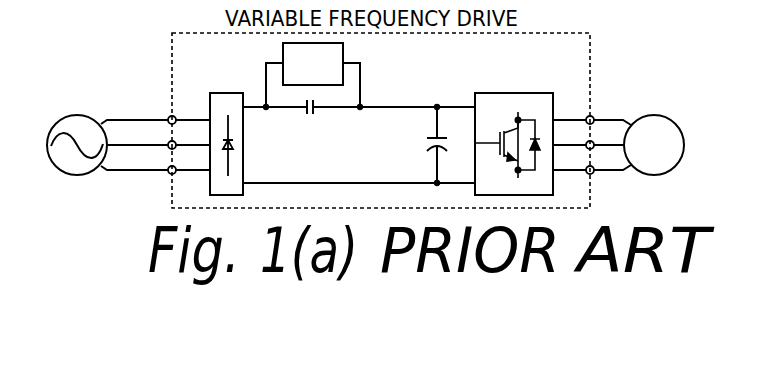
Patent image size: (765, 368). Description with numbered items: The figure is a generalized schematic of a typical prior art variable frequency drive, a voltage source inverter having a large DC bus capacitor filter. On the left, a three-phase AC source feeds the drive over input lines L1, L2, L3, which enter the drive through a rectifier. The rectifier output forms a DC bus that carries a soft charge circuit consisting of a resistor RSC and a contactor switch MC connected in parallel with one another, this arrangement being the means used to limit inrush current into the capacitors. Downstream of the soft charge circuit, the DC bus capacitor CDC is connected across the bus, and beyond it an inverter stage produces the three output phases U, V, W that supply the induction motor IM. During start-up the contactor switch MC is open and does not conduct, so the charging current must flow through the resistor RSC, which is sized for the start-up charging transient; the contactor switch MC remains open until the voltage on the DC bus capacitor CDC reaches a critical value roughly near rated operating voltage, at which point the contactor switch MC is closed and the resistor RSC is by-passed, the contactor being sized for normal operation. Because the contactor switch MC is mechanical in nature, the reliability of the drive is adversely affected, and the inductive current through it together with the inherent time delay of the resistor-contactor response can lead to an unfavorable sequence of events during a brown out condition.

The input phase line 1 L1 is at (176, 110).
The input phase line 2 L2 is at (176, 135).
The input phase line 3 L3 is at (176, 160).
The resistor RSC is at (313, 76).
The contactor switch MC is at (310, 118).
The DC bus capacitor CDC is at (416, 145).
The output phase U is at (592, 111).
The output phase V is at (588, 135).
The output phase W is at (592, 160).
The induction motor IM is at (654, 145).